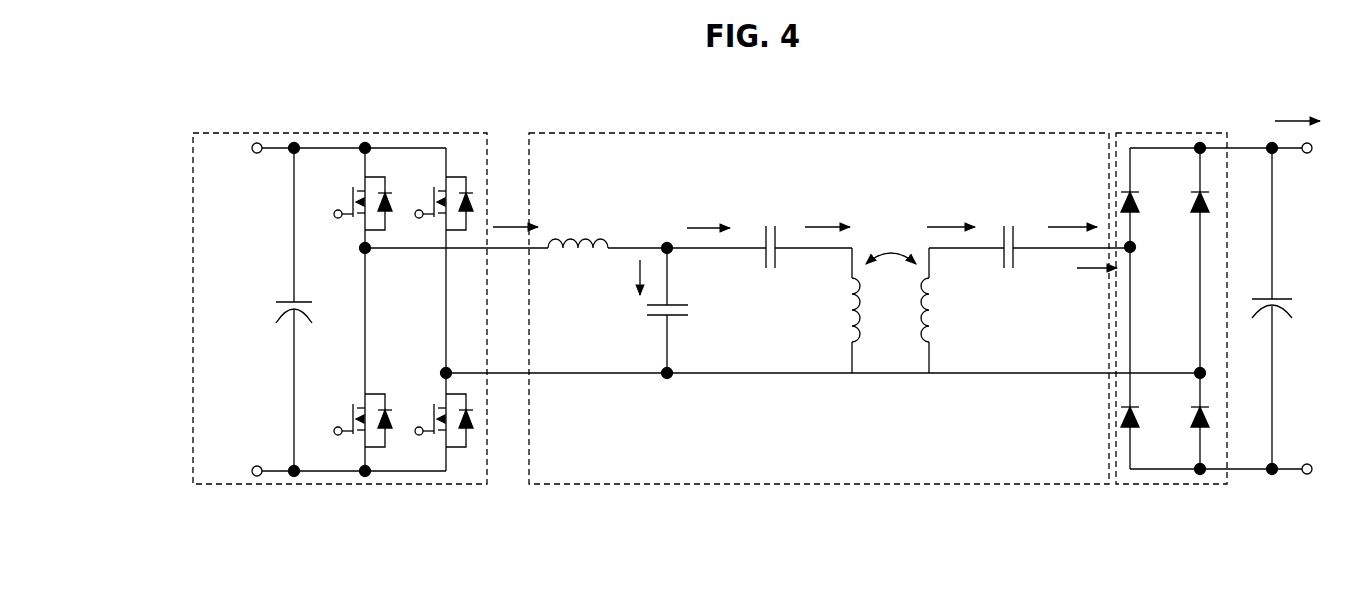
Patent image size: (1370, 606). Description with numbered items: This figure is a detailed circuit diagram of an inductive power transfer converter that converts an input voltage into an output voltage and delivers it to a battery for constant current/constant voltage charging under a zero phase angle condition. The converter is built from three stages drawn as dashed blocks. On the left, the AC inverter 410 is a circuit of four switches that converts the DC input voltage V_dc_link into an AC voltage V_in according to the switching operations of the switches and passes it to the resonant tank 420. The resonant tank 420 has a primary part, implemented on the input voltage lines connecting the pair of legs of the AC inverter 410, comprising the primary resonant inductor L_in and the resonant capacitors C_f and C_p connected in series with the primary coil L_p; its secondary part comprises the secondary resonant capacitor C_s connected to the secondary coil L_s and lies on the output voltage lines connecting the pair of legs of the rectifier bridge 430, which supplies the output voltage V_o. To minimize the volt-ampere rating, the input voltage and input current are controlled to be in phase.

The AC inverter 410 is at (338, 133).
The resonant tank 420 is at (817, 133).
The rectifier bridge 430 is at (1169, 133).